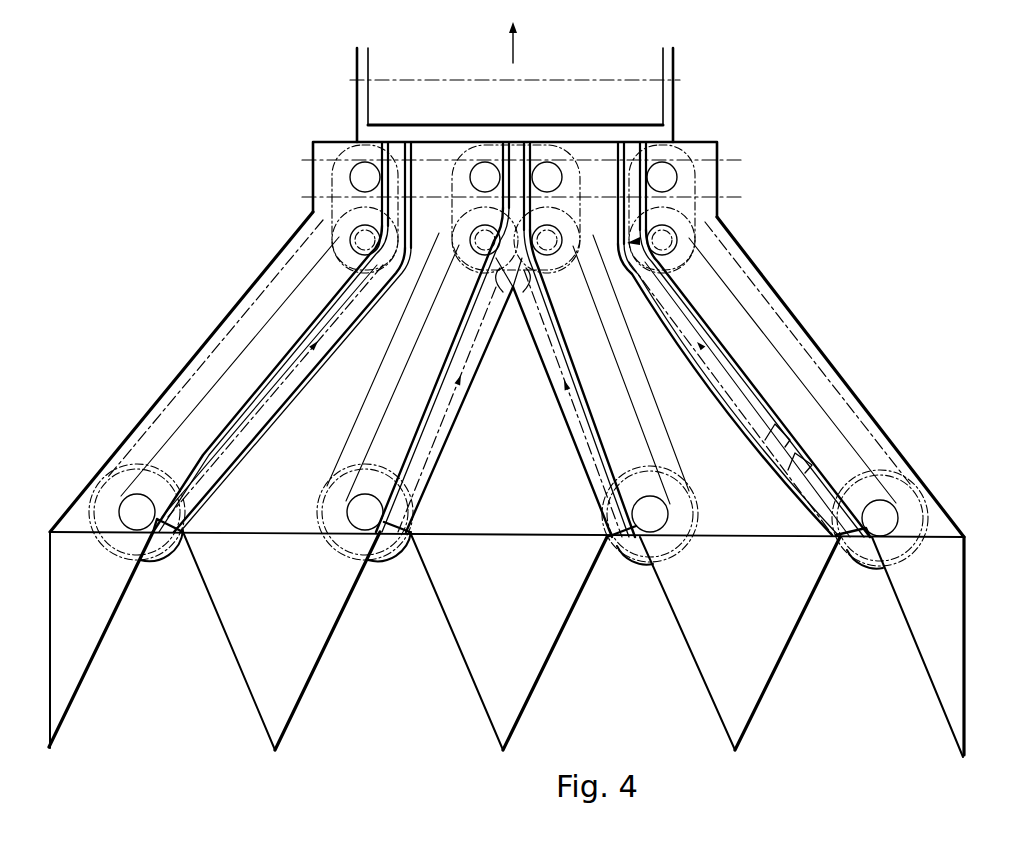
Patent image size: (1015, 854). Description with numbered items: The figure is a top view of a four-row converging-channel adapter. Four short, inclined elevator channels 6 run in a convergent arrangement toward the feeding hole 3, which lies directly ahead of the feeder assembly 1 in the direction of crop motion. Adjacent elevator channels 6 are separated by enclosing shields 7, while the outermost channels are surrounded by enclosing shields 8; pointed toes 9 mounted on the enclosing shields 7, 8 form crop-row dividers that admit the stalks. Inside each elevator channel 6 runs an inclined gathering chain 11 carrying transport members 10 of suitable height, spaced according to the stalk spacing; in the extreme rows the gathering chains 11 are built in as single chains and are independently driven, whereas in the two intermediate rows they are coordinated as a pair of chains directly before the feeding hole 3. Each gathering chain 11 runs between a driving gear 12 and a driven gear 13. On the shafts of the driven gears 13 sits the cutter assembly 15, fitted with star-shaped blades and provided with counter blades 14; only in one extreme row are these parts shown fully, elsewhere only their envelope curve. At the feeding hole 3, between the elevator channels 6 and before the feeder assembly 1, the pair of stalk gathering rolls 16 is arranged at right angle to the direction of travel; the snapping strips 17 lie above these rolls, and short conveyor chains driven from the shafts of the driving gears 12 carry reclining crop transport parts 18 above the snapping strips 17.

The feeder assembly 1 is at (650, 100).
The feeding hole 3 is at (528, 132).
The elevator channel 6 is at (340, 323).
The enclosing shield 7 is at (510, 515).
The enclosing shield 8 is at (185, 375).
The pointed toe 9 is at (247, 663).
The transport member 10 is at (297, 383).
The gathering chain 11 is at (280, 436).
The driving gear 12 is at (352, 238).
The driven gear 13 is at (128, 505).
The counter blade 14 is at (180, 522).
The cutter assembly 15 is at (155, 565).
The pair of stalk gathering rolls 16 is at (734, 192).
The snapping strip 17 is at (458, 200).
The crop transport part 18 is at (514, 300).